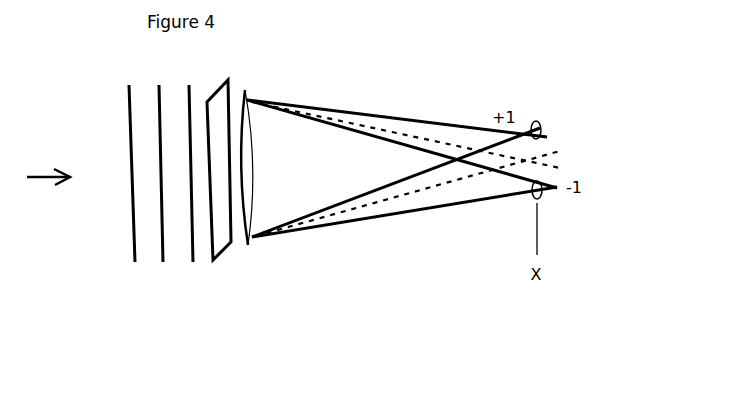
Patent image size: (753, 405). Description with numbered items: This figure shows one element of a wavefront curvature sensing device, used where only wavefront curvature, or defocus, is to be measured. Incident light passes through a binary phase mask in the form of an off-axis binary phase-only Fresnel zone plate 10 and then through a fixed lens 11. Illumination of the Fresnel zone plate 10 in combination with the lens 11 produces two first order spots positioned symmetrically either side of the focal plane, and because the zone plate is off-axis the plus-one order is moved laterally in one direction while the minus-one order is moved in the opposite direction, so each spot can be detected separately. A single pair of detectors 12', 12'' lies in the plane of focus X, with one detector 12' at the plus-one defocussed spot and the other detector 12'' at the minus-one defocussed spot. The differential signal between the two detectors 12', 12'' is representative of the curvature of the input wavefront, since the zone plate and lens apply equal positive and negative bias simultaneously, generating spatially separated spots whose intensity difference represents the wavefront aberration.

The off-axis binary phase-only Fresnel zone plate 10 is at (218, 86).
The lens 11 is at (252, 247).
The detector 12' is at (559, 110).
The detector 12'' is at (566, 207).